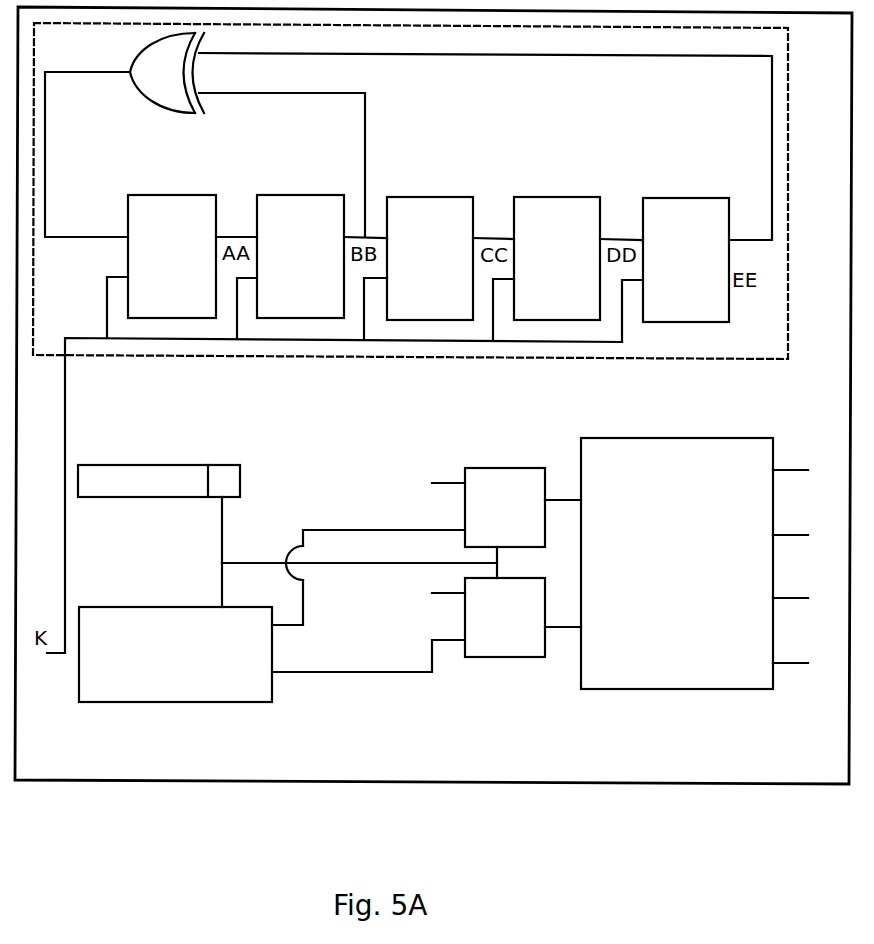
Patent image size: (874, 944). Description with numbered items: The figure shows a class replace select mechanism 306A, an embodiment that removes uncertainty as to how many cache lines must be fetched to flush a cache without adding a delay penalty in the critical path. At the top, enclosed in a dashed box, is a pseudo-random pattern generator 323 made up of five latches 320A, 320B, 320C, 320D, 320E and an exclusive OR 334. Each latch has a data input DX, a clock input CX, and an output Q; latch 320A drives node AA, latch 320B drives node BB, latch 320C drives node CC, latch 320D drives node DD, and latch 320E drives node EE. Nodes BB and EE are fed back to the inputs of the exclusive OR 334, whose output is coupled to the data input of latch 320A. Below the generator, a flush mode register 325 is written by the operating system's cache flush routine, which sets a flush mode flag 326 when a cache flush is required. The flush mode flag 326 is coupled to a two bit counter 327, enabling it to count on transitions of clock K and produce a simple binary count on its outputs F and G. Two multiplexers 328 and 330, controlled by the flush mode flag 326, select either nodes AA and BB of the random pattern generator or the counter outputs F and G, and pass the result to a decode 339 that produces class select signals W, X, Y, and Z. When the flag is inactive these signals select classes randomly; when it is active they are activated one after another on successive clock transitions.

The class replace select mechanism 306A is at (242, 782).
The random pattern generator 323 is at (290, 358).
The exclusive OR 334 is at (135, 110).
The latch 320A is at (150, 195).
The latch 320B is at (279, 195).
The latch 320C is at (409, 197).
The latch 320D is at (536, 197).
The latch 320E is at (665, 198).
The flush mode register 325 is at (185, 437).
The flush mode flag 326 is at (225, 465).
The two bit counter 327 is at (182, 703).
The multiplexer 328 is at (497, 468).
The multiplexer 330 is at (517, 658).
The decode 339 is at (645, 438).